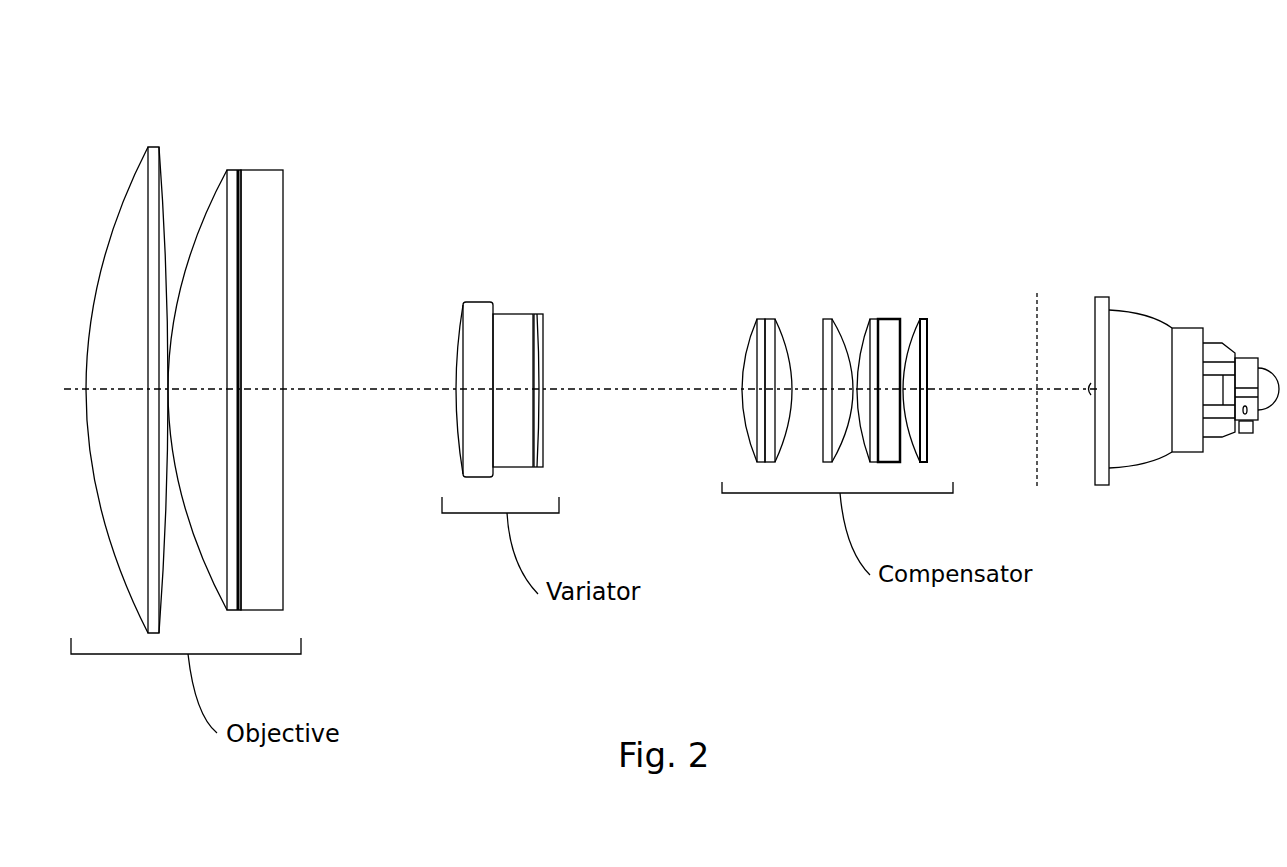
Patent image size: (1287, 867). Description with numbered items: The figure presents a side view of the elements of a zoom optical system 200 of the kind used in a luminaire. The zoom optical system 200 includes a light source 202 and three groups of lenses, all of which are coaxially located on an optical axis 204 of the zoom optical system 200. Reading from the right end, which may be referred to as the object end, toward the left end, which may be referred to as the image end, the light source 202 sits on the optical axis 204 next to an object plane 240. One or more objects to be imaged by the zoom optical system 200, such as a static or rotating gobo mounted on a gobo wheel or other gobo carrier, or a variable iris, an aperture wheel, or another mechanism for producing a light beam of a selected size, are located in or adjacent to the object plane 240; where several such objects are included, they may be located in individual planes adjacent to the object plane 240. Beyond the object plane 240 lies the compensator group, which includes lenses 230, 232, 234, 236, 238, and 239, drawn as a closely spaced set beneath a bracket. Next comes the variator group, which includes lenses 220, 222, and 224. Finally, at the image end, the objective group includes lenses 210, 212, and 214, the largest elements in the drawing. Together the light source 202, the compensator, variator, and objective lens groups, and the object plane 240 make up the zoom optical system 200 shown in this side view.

The zoom optical system 200 is at (618, 88).
The light source 202 is at (1143, 313).
The optical axis 204 is at (1056, 389).
The lens 210 is at (155, 147).
The lens 212 is at (230, 170).
The lens 214 is at (273, 170).
The lens 220 is at (474, 300).
The lens 222 is at (518, 314).
The lens 224 is at (539, 314).
The lens 230 is at (757, 319).
The lens 232 is at (771, 319).
The lens 234 is at (828, 319).
The lens 236 is at (874, 319).
The lens 238 is at (889, 319).
The lens 239 is at (923, 319).
The object plane 240 is at (1037, 487).